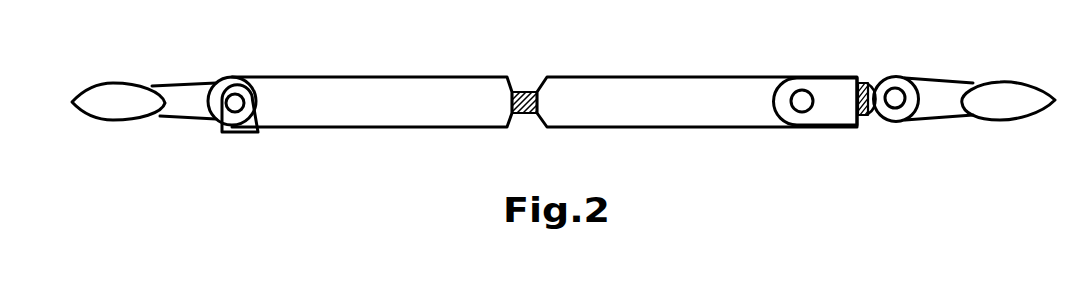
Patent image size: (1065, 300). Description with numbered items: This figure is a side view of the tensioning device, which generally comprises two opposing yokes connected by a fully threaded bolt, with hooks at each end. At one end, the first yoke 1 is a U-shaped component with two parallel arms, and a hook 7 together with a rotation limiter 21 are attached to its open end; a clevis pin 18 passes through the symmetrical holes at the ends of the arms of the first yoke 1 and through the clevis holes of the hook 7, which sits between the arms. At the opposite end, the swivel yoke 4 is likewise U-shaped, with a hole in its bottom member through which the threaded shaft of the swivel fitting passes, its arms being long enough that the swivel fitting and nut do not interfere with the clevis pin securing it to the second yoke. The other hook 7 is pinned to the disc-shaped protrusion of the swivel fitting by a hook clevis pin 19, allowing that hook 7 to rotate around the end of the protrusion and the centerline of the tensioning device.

The first yoke 1 is at (392, 127).
The swivel yoke 4 is at (832, 127).
The hook 7 is at (112, 120).
The clevis pin 18 is at (218, 85).
The hook clevis pin 19 is at (893, 107).
The rotation limiter 21 is at (235, 135).